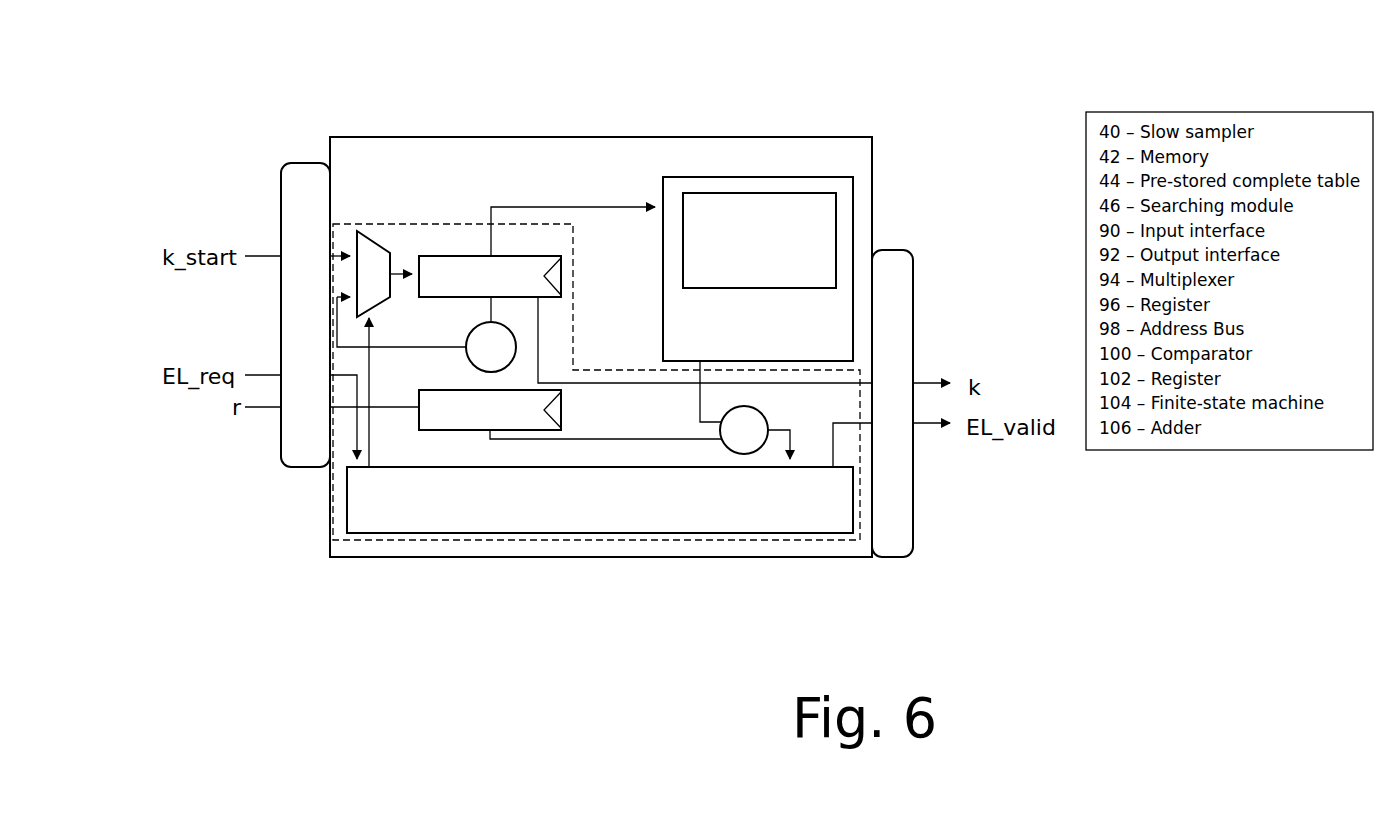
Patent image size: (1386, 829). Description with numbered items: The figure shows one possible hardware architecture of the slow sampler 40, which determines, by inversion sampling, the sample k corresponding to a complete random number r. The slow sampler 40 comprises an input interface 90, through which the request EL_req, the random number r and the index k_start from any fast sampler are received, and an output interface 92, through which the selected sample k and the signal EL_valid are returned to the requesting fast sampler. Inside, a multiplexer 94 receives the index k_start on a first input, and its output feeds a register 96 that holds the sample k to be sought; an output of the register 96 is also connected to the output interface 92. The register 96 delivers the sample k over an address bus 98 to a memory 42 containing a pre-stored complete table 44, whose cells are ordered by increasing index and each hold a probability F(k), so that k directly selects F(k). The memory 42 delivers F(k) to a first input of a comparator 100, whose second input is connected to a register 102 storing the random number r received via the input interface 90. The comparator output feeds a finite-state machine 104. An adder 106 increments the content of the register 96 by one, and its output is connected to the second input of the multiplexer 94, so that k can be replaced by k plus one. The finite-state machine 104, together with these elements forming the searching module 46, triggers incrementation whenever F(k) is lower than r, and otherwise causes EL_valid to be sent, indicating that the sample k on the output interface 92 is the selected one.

The slow sampler 40 is at (375, 128).
The memory 42 is at (834, 170).
The pre-stored complete table 44 is at (759, 240).
The searching module 46 is at (793, 549).
The input interface 90 is at (305, 162).
The output interface 92 is at (900, 249).
The multiplexer 94 is at (378, 230).
The register 96 is at (432, 256).
The address bus 98 is at (552, 207).
The comparator 100 is at (765, 413).
The register 102 is at (563, 403).
The finite-state machine 104 is at (643, 507).
The adder 106 is at (466, 352).